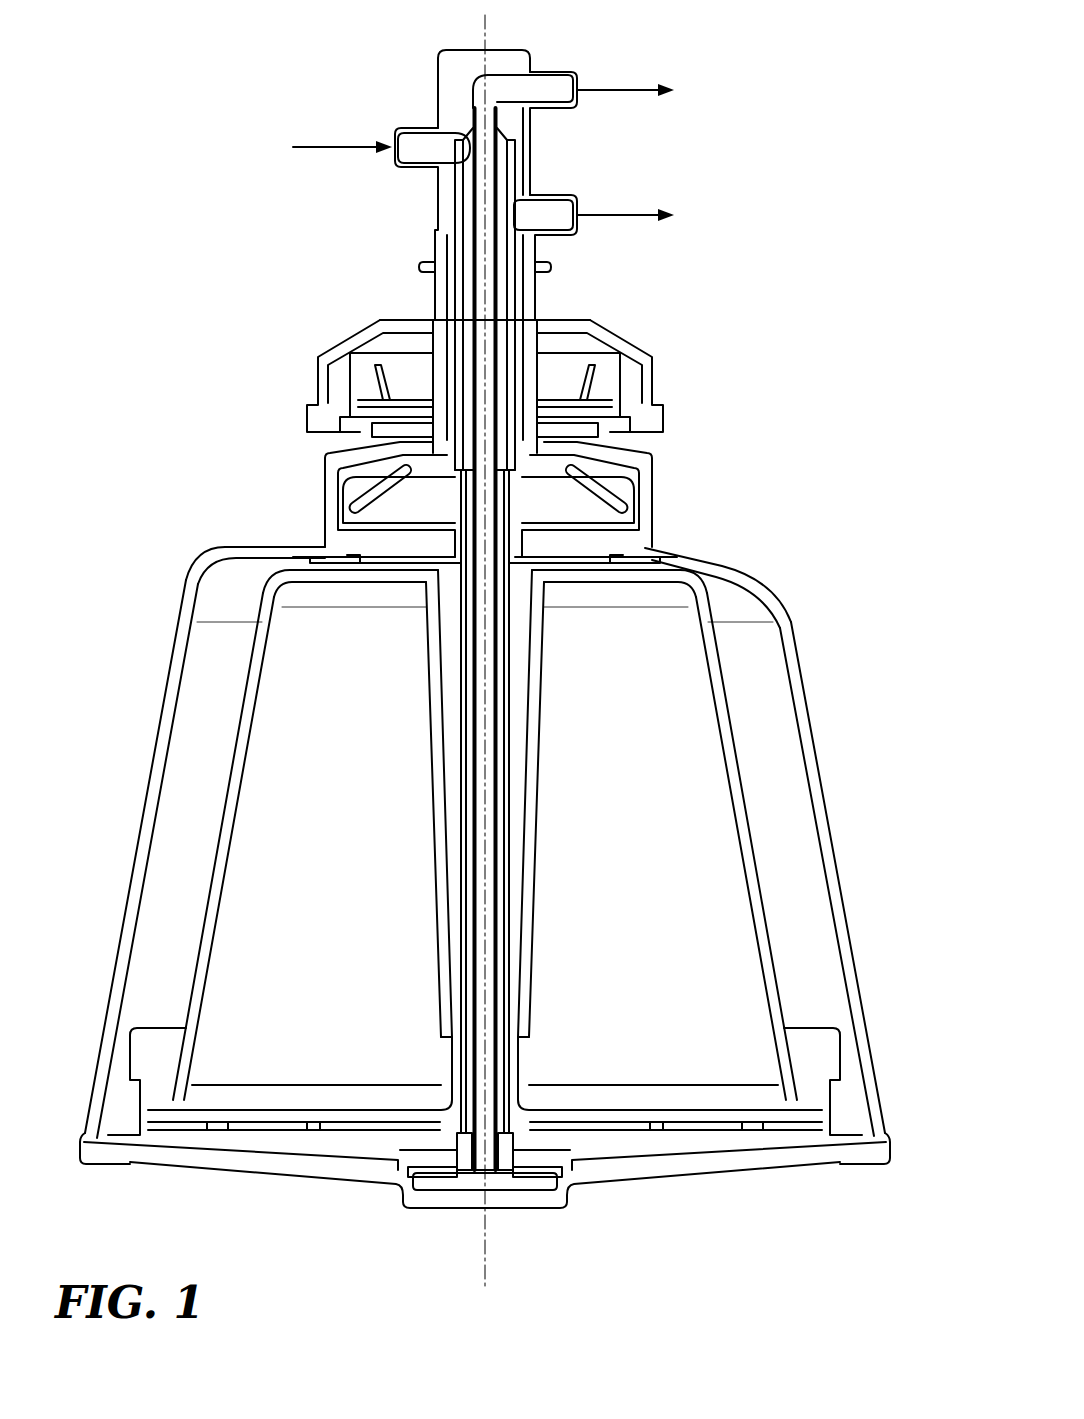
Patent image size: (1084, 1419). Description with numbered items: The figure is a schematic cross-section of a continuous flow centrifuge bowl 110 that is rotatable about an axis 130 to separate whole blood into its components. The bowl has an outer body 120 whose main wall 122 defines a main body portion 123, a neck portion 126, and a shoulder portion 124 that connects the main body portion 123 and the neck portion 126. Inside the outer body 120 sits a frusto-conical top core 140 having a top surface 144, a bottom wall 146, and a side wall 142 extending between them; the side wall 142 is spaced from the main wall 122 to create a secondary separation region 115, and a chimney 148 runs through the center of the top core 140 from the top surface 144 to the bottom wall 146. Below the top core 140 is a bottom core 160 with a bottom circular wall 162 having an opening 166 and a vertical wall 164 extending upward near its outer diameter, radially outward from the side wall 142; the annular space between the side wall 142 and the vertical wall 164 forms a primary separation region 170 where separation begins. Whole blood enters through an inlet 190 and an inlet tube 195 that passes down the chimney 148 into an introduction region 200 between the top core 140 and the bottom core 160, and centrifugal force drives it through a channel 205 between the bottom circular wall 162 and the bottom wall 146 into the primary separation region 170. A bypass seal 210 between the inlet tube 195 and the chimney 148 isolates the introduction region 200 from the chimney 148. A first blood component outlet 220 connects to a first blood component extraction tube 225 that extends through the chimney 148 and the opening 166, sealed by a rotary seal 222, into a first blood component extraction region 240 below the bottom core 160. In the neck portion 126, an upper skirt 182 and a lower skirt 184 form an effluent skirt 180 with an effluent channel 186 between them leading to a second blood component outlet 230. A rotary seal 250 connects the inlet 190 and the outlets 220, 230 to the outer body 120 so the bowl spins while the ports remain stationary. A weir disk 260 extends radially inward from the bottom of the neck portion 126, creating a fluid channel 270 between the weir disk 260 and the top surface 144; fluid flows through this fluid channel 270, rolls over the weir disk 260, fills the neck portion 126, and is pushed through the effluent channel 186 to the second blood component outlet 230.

The centrifuge bowl 110 is at (203, 88).
The secondary separation region 115 is at (185, 790).
The outer body 120 is at (150, 670).
The main wall 122 is at (838, 873).
The main body portion 123 is at (130, 878).
The shoulder portion 124 is at (710, 557).
The neck portion 126 is at (655, 530).
The axis 130 is at (485, 30).
The top core 140 is at (755, 805).
The side wall 142 is at (725, 741).
The top surface 144 is at (293, 548).
The bottom wall 146 is at (725, 1115).
The chimney 148 is at (540, 690).
The bottom core 160 is at (852, 1048).
The bottom circular wall 162 is at (692, 1130).
The vertical wall 164 is at (873, 1162).
The opening 166 is at (453, 1172).
The primary separation region 170 is at (812, 1065).
The effluent skirt 180 is at (620, 462).
The upper skirt 182 is at (617, 488).
The lower skirt 184 is at (641, 520).
The effluent channel 186 is at (625, 510).
The inlet 190 is at (400, 126).
The inlet tube 195 is at (468, 595).
The introduction region 200 is at (462, 1115).
The channel 205 is at (625, 1125).
The bypass seal 210 is at (455, 1085).
The first blood component outlet 220 is at (555, 70).
The seal 222 is at (498, 1172).
The first blood component extraction tube 225 is at (480, 1172).
The second blood component outlet 230 is at (572, 195).
The first blood component extraction region 240 is at (522, 1180).
The rotary seal 250 is at (308, 368).
The weir disk 260 is at (352, 560).
The fluid channel 270 is at (340, 562).